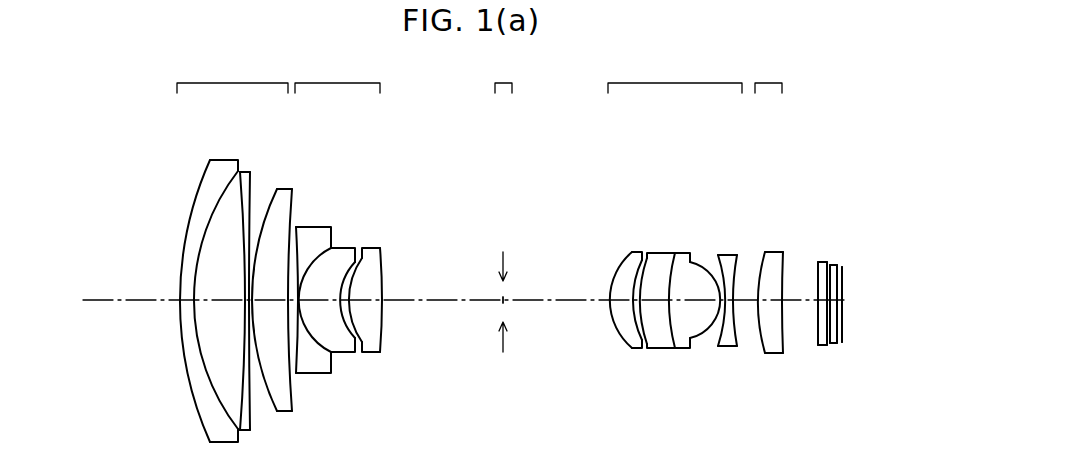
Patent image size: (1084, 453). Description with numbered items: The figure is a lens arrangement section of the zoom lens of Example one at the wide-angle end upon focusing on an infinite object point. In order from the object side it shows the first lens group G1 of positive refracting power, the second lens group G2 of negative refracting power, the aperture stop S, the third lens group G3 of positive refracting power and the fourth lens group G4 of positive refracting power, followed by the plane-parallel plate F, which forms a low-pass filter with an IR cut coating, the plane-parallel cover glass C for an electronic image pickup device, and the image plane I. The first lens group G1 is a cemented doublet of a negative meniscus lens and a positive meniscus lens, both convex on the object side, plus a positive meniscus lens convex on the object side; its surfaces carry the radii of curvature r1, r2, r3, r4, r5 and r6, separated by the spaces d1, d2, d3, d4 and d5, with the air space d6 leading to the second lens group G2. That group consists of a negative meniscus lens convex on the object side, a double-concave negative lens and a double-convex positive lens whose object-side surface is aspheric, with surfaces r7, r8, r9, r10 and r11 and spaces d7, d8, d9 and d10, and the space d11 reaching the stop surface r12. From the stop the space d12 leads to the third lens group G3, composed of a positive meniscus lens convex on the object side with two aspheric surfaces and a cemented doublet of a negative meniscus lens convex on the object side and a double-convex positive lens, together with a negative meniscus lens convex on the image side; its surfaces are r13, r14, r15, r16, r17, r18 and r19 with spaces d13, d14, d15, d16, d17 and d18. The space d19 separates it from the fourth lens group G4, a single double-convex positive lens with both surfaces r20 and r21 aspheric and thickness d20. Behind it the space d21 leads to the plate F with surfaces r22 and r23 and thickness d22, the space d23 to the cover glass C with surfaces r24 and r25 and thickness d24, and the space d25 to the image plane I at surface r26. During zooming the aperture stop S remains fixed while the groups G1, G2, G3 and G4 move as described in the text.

The first lens group G1 is at (234, 248).
The second lens group G2 is at (337, 214).
The third lens group G3 is at (675, 201).
The fourth lens group G4 is at (769, 204).
The aperture stop S is at (503, 203).
The plane-parallel plate F is at (818, 347).
The cover glass C is at (837, 345).
The image plane I is at (845, 289).
The radius of curvature of lens surface r1 is at (197, 195).
The radius of curvature of lens surface r2 is at (226, 190).
The radius of curvature of lens surface r3 is at (247, 172).
The radius of curvature of lens surface r4 is at (252, 195).
The radius of curvature of lens surface r5 is at (283, 195).
The radius of curvature of lens surface r6 is at (293, 230).
The radius of curvature of lens surface r7 is at (299, 238).
The radius of curvature of lens surface r8 is at (327, 245).
The radius of curvature of lens surface r9 is at (351, 252).
The radius of curvature of lens surface r10 is at (360, 252).
The radius of curvature of lens surface r11 is at (382, 262).
The radius of curvature of lens surface r12 is at (502, 253).
The radius of curvature of lens surface r13 is at (617, 267).
The radius of curvature of lens surface r14 is at (636, 255).
The radius of curvature of lens surface r15 is at (655, 253).
The radius of curvature of lens surface r16 is at (673, 253).
The radius of curvature of lens surface r17 is at (693, 258).
The radius of curvature of lens surface r18 is at (720, 253).
The radius of curvature of lens surface r19 is at (730, 255).
The radius of curvature of lens surface r20 is at (763, 250).
The radius of curvature of lens surface r21 is at (785, 250).
The radius of curvature of lens surface r22 is at (818, 263).
The radius of curvature of lens surface r23 is at (827, 265).
The radius of curvature of lens surface r24 is at (830, 265).
The radius of curvature of lens surface r25 is at (837, 270).
The radius of curvature of lens surface r26 is at (843, 277).
The space between adjacent lens surfaces d1 is at (187, 303).
The space between adjacent lens surfaces d2 is at (220, 314).
The space between adjacent lens surfaces d3 is at (249, 320).
The space between adjacent lens surfaces d4 is at (268, 314).
The space between adjacent lens surfaces d5 is at (286, 320).
The space between adjacent lens surfaces d6 is at (293, 320).
The space between adjacent lens surfaces d7 is at (320, 312).
The space between adjacent lens surfaces d8 is at (337, 345).
The space between adjacent lens surfaces d9 is at (355, 346).
The space between adjacent lens surfaces d10 is at (376, 350).
The space between adjacent lens surfaces d11 is at (436, 317).
The space between adjacent lens surfaces d12 is at (558, 317).
The space between adjacent lens surfaces d13 is at (622, 305).
The space between adjacent lens surfaces d14 is at (634, 350).
The space between adjacent lens surfaces d15 is at (659, 305).
The space between adjacent lens surfaces d16 is at (701, 319).
The space between adjacent lens surfaces d17 is at (713, 347).
The space between adjacent lens surfaces d18 is at (728, 357).
The space between adjacent lens surfaces d19 is at (748, 345).
The space between adjacent lens surfaces d20 is at (773, 357).
The space between adjacent lens surfaces d21 is at (802, 321).
The space between adjacent lens surfaces d22 is at (820, 343).
The space between adjacent lens surfaces d23 is at (827, 347).
The space between adjacent lens surfaces d24 is at (837, 345).
The space between adjacent lens surfaces d25 is at (842, 343).